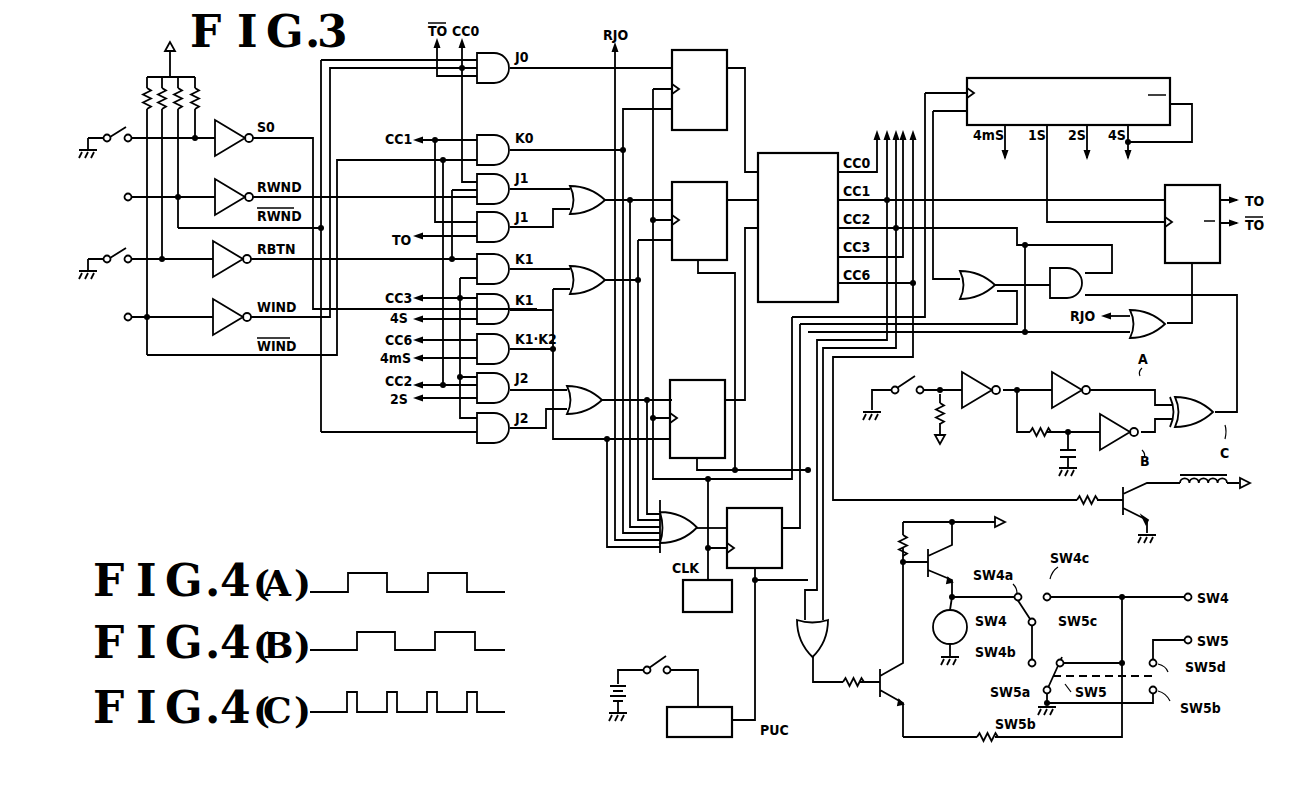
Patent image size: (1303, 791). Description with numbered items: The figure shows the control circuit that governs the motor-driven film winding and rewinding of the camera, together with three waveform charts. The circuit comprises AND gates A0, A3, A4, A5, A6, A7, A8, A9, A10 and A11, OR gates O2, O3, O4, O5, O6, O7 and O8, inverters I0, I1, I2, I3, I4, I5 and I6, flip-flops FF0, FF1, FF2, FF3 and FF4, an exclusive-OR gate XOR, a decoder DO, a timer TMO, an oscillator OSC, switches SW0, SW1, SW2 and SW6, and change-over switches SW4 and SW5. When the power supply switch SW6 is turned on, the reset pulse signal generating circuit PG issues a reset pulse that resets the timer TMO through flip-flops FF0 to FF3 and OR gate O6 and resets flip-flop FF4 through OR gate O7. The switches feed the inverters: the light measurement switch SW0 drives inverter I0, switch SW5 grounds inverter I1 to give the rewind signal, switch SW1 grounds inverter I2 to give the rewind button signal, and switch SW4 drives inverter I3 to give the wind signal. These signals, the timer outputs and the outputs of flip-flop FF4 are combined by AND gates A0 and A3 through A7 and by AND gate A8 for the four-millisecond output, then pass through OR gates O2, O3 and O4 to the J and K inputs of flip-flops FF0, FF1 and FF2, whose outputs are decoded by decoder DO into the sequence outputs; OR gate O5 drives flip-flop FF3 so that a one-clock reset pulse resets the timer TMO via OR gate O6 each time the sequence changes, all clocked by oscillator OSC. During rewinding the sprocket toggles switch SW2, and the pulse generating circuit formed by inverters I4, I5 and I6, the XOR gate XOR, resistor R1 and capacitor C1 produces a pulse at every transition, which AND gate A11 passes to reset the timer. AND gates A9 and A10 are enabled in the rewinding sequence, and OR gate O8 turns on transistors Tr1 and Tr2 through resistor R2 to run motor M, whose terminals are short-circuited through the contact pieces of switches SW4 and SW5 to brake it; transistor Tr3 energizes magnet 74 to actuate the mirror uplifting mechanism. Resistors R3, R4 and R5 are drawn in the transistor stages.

The light measurement switch SW0 is at (113, 126).
The switch SW1 is at (113, 248).
The switch SW2 is at (892, 384).
The change-over switch SW4 is at (149, 318).
The change-over switch SW5 is at (150, 198).
The power supply switch SW6 is at (653, 653).
The inverter I0 is at (234, 138).
The inverter I1 is at (234, 197).
The inverter I2 is at (232, 259).
The inverter I3 is at (232, 317).
The inverter I4 is at (987, 407).
The inverter I5 is at (1076, 373).
The inverter I6 is at (1120, 420).
The AND gate A0 is at (493, 68).
The AND gate A3 is at (493, 150).
The AND gate A4 is at (493, 189).
The AND gate A5 is at (493, 227).
The AND gate A6 is at (493, 269).
The AND gate A7 is at (493, 309).
The AND gate A8 is at (493, 349).
The AND gate A9 is at (493, 388).
The AND gate A10 is at (493, 428).
The AND gate A11 is at (1066, 283).
The OR gate O2 is at (587, 200).
The OR gate O3 is at (587, 280).
The OR gate O4 is at (584, 400).
The OR gate O5 is at (678, 526).
The OR gate O6 is at (977, 285).
The OR gate O7 is at (1147, 324).
The OR gate O8 is at (812, 638).
The flip-flop FF0 is at (694, 53).
The flip-flop FF1 is at (694, 185).
The flip-flop FF2 is at (692, 383).
The flip-flop FF3 is at (736, 511).
The flip-flop FF4 is at (1202, 182).
The decoder DO is at (819, 149).
The timer TMO is at (1125, 78).
The oscillator OSC is at (707, 596).
The reset pulse signal generating circuit PG is at (699, 722).
The XOR gate XOR is at (1197, 391).
The resistor R1 is at (1042, 415).
The resistor R2 is at (852, 667).
The resistor R3 is at (889, 543).
The resistor R4 is at (975, 725).
The resistor R5 is at (1086, 485).
The capacitor C1 is at (1061, 454).
The transistor Tr1 is at (900, 685).
The transistor Tr2 is at (958, 571).
The transistor Tr3 is at (1150, 505).
The motor M is at (950, 631).
The magnet 74 is at (1198, 474).